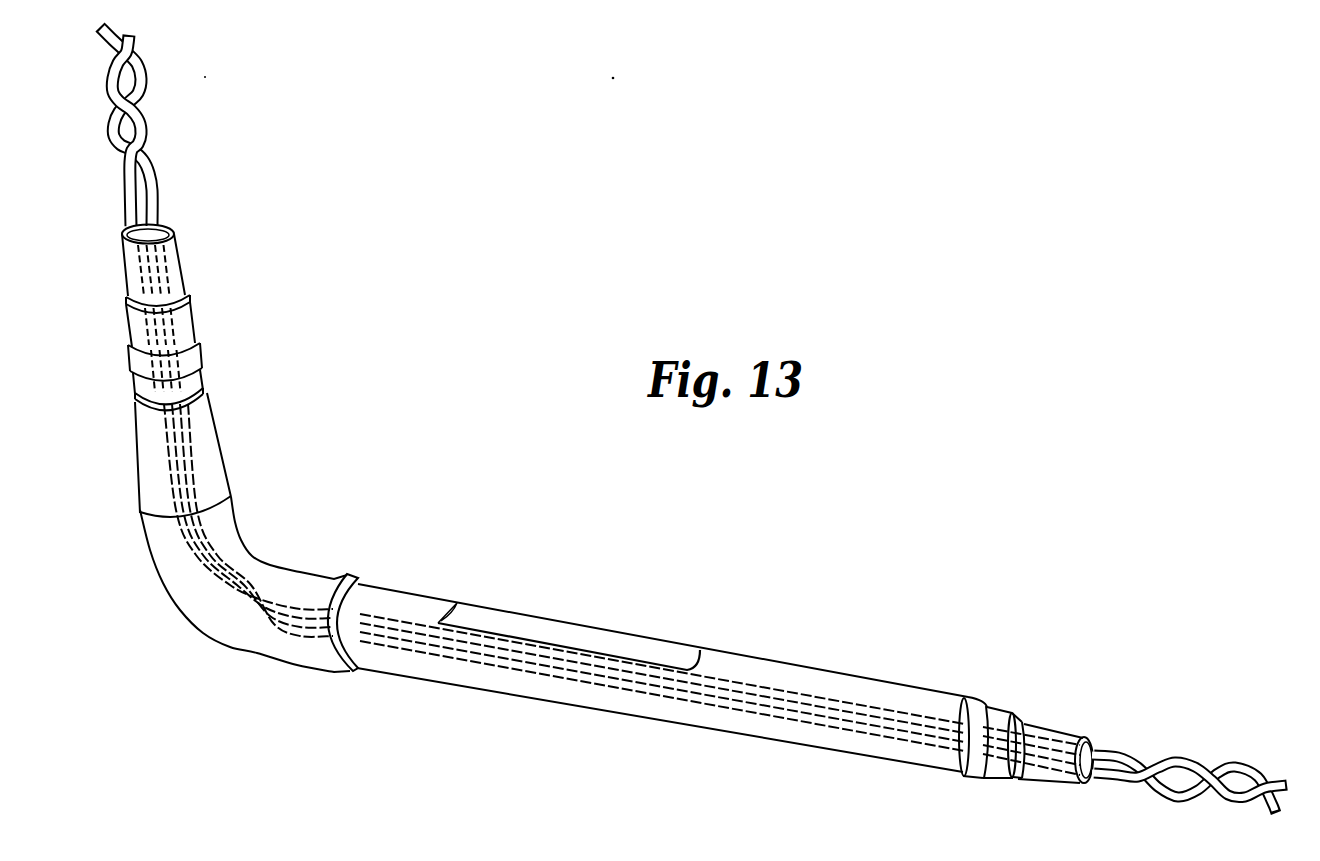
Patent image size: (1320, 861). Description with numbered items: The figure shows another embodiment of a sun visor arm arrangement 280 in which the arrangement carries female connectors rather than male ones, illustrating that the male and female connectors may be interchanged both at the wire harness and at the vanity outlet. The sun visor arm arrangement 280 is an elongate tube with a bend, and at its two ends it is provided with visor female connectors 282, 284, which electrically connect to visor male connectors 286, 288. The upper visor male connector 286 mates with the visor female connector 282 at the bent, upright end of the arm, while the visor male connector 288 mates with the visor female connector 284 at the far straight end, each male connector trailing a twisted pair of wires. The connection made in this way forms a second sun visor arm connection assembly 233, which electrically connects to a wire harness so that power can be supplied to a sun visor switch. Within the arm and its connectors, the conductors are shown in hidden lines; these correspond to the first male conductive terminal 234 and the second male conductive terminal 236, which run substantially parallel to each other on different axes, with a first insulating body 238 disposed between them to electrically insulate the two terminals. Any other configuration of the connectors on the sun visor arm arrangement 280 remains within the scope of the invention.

The second sun visor arm connection assembly 233 is at (118, 342).
The first male conductive terminal 234 is at (270, 587).
The second male conductive terminal 236 is at (230, 607).
The first insulating body 238 is at (383, 603).
The sun visor arm arrangement 280 is at (134, 529).
The visor female connector 282 is at (193, 317).
The visor female connector 284 is at (1010, 715).
The visor male connector 286 is at (180, 262).
The visor male connector 288 is at (1067, 730).